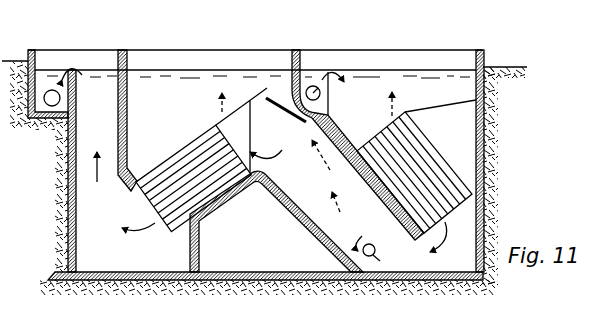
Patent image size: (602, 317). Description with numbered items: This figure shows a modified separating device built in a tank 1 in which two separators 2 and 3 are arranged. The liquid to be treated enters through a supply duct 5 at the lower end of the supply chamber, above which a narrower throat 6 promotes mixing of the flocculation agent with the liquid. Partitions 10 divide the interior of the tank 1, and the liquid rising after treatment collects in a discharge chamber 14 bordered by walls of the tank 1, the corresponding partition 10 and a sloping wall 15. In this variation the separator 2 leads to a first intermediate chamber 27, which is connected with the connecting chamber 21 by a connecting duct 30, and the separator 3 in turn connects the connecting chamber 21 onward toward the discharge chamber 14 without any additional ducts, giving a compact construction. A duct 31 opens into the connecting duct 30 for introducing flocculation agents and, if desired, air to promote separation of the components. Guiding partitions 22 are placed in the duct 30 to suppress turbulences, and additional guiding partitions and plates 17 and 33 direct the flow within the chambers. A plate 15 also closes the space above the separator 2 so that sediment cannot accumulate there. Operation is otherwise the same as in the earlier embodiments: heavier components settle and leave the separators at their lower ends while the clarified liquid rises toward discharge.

The tank 1 is at (57, 211).
The separator 2 is at (423, 160).
The separator 3 is at (182, 160).
The supply duct 5 is at (330, 78).
The throat 6 is at (405, 66).
The partition 10 is at (124, 50).
The discharge chamber 14 is at (104, 115).
The sloping wall 15 is at (448, 108).
The guiding partition 17 is at (245, 139).
The connecting chamber 21 is at (168, 115).
The guiding partition 22 is at (317, 200).
The first intermediate chamber 27 is at (466, 265).
The connecting duct 30 is at (392, 233).
The duct 31 is at (380, 252).
The guiding plate 33 is at (292, 125).